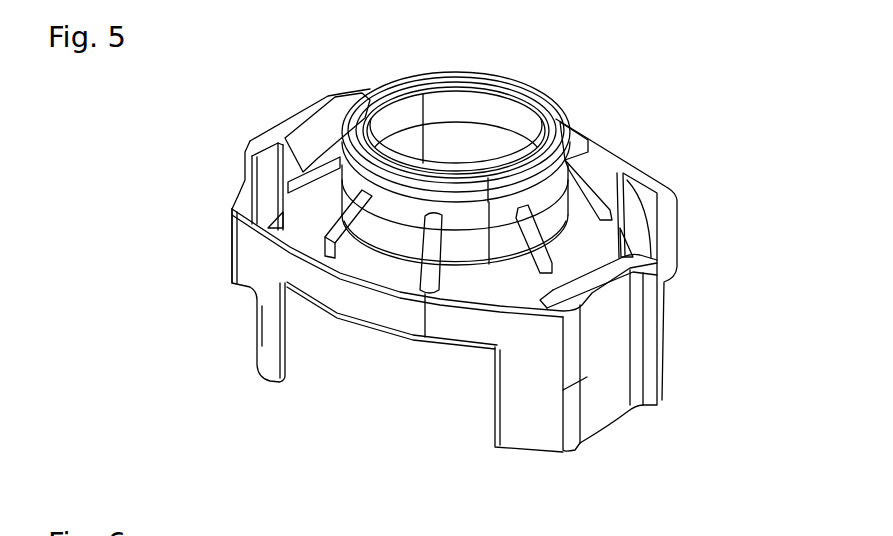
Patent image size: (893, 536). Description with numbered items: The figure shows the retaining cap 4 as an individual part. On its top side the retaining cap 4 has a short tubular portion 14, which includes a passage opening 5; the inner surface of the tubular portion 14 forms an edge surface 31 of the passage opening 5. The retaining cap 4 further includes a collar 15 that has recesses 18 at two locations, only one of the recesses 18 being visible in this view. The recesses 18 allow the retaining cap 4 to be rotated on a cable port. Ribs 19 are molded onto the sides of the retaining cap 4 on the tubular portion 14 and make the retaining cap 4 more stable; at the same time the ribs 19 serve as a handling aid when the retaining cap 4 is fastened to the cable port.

The retaining cap 4 is at (419, 273).
The passage opening 5 is at (507, 108).
The edge surface 31 is at (492, 141).
The tubular portion 14 is at (558, 196).
The collar 15 is at (258, 282).
The ribs 19 is at (349, 241).
The recesses 18 is at (425, 420).